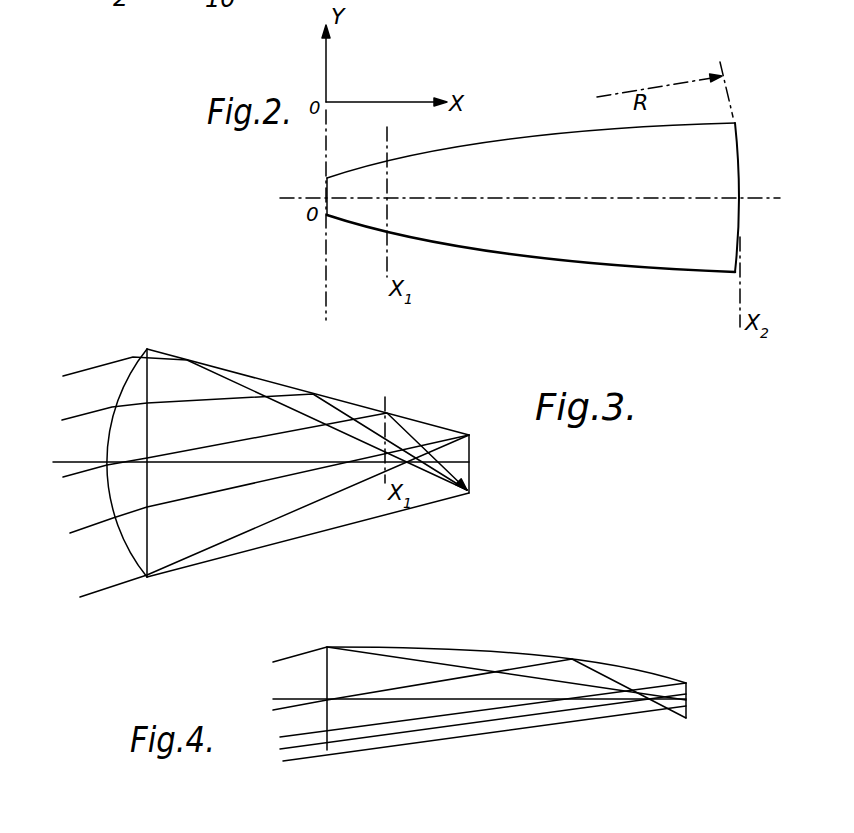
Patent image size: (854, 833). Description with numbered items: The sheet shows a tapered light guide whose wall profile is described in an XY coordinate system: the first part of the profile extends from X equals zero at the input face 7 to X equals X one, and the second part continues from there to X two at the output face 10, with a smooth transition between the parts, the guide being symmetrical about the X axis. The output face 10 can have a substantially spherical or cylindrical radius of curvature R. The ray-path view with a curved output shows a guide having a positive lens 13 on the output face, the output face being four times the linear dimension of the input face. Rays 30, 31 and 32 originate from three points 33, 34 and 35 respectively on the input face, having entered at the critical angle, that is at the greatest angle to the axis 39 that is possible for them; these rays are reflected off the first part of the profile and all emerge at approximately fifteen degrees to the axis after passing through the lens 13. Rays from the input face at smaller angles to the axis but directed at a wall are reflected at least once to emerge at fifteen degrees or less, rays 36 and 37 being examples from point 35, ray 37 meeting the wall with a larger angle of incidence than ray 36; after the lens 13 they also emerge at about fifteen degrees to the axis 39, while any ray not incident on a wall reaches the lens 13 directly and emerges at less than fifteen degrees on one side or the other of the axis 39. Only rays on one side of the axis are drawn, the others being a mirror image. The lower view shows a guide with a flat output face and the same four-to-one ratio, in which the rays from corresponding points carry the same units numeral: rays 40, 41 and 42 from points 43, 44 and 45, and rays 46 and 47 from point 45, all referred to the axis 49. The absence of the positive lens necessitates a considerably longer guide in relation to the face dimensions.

In FIG. 2, the input face 7 is at (326, 190).
In FIG. 3, the input face 7 is at (469, 478).
In FIG. 4, the input face 7 is at (690, 690).
In FIG. 2, the output face 10 is at (739, 160).
In FIG. 3, the output face 10 is at (130, 548).
In FIG. 4, the output face 10 is at (330, 662).
In FIG. 3, the positive lens 13 is at (135, 375).
In FIG. 3, the ray 30 is at (108, 592).
In FIG. 3, the ray 31 is at (100, 525).
In FIG. 3, the ray 32 is at (100, 474).
In FIG. 3, the point on the input face 33 is at (469, 433).
In FIG. 3, the point on the input face 34 is at (469, 462).
In FIG. 3, the point on the input face 35 is at (469, 493).
In FIG. 3, the ray 36 is at (97, 412).
In FIG. 3, the ray 37 is at (92, 368).
In FIG. 3, the axis 39 is at (96, 462).
In FIG. 4, the ray 40 is at (295, 764).
In FIG. 4, the ray 41 is at (288, 750).
In FIG. 4, the ray 42 is at (290, 736).
In FIG. 4, the point on the input face 43 is at (697, 672).
In FIG. 4, the point on the input face 44 is at (686, 700).
In FIG. 4, the point on the input face 45 is at (686, 718).
In FIG. 4, the ray 46 is at (280, 711).
In FIG. 4, the ray 47 is at (286, 657).
In FIG. 4, the axis 49 is at (287, 697).